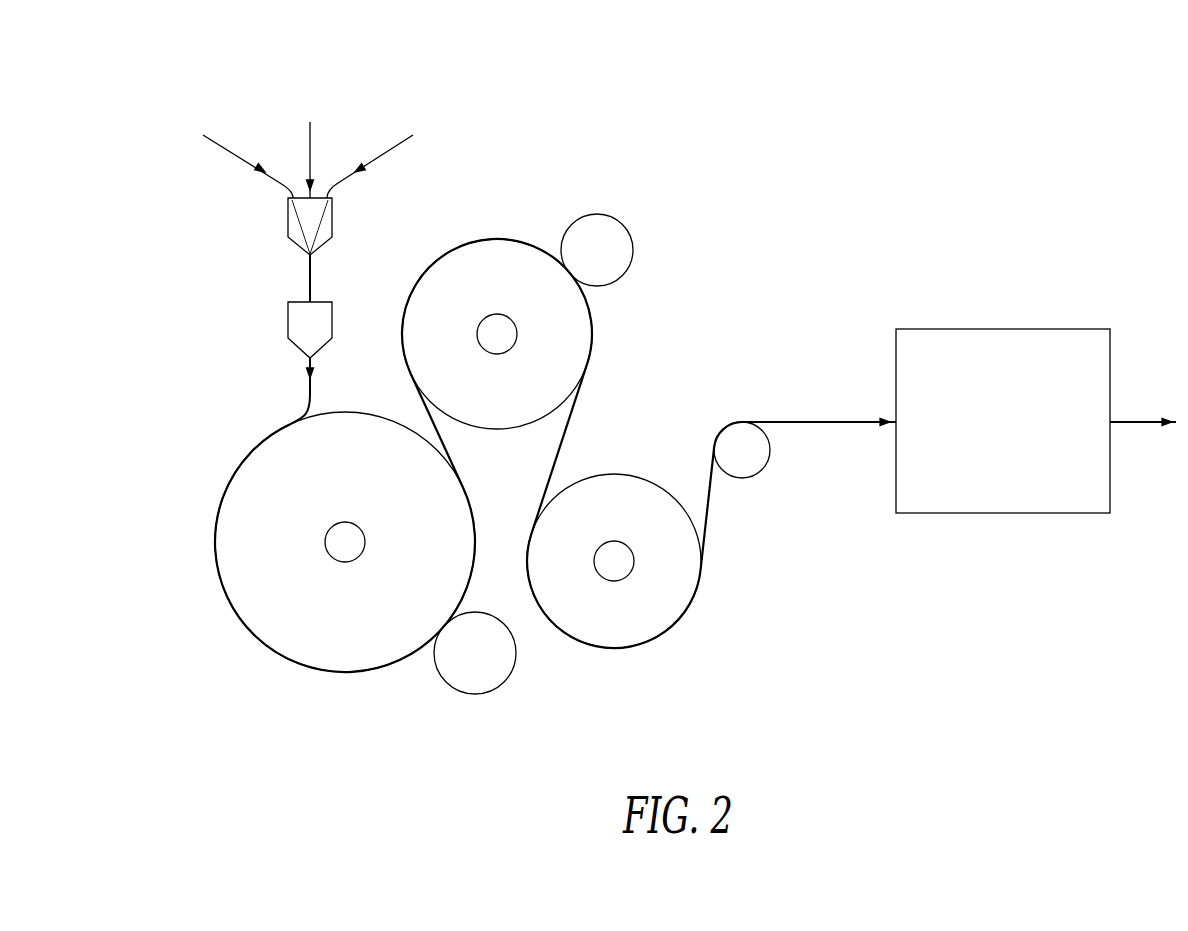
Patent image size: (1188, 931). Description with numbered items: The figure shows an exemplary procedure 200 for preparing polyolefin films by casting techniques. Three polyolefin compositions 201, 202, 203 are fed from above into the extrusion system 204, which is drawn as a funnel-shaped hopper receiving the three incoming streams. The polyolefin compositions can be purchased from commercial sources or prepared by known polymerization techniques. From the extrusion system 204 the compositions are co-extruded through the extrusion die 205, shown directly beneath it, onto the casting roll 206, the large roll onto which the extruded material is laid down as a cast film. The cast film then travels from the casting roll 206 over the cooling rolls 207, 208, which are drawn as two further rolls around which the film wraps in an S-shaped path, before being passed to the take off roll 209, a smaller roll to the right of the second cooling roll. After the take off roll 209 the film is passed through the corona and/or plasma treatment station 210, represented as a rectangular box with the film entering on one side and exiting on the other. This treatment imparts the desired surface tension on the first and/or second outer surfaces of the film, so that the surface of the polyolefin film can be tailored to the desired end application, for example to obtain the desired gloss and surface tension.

The procedure 200 is at (727, 101).
The polyolefin composition 201 is at (225, 140).
The polyolefin composition 202 is at (308, 150).
The polyolefin composition 203 is at (393, 145).
The extrusion system 204 is at (287, 214).
The extrusion die 205 is at (287, 318).
The casting roll 206 is at (256, 430).
The cooling roll 207 is at (603, 300).
The cooling roll 208 is at (637, 456).
The take off roll 209 is at (781, 461).
The corona and/or plasma treatment station 210 is at (1031, 294).